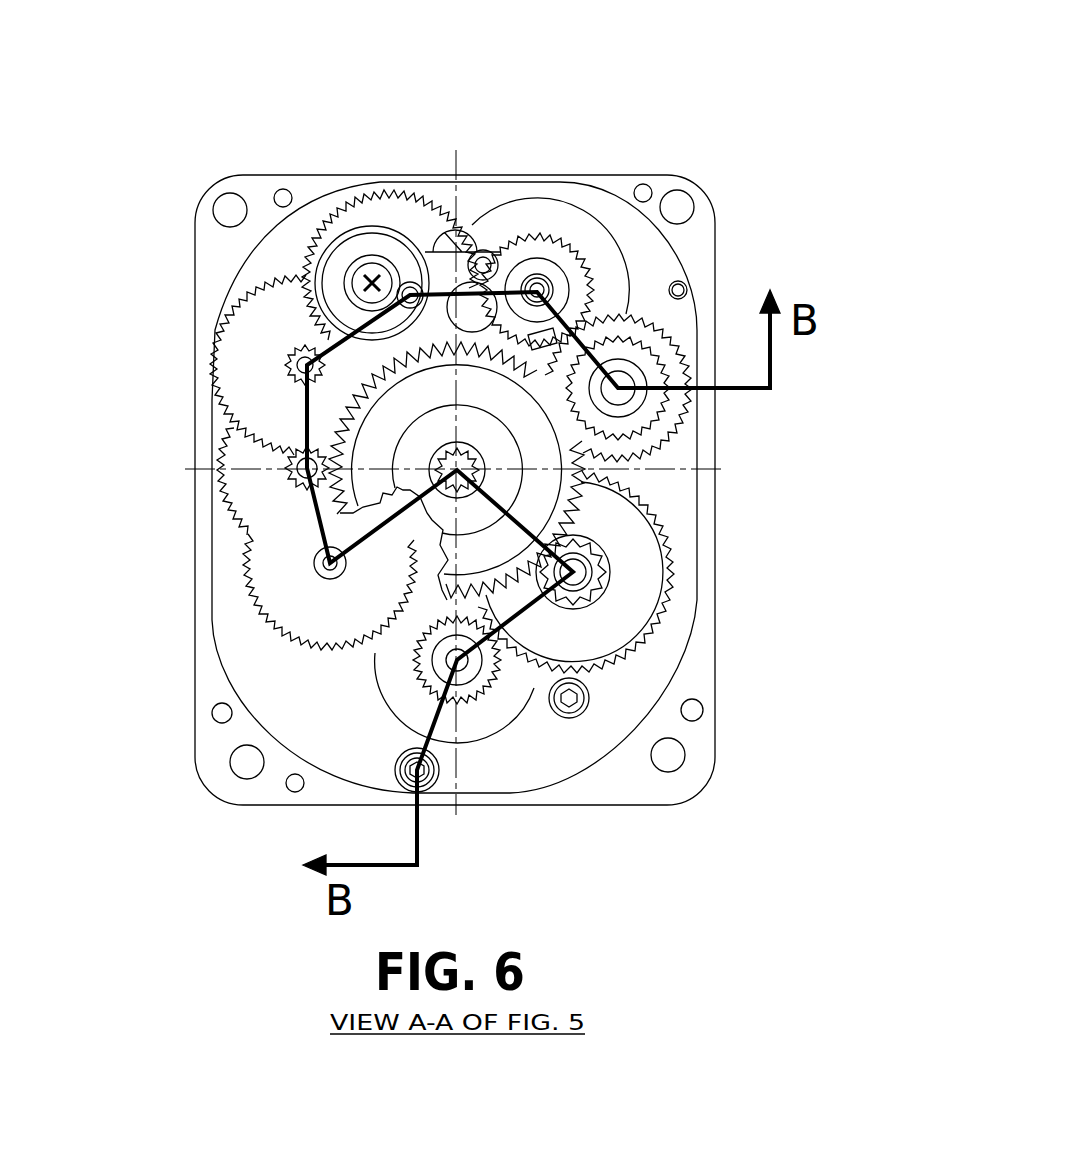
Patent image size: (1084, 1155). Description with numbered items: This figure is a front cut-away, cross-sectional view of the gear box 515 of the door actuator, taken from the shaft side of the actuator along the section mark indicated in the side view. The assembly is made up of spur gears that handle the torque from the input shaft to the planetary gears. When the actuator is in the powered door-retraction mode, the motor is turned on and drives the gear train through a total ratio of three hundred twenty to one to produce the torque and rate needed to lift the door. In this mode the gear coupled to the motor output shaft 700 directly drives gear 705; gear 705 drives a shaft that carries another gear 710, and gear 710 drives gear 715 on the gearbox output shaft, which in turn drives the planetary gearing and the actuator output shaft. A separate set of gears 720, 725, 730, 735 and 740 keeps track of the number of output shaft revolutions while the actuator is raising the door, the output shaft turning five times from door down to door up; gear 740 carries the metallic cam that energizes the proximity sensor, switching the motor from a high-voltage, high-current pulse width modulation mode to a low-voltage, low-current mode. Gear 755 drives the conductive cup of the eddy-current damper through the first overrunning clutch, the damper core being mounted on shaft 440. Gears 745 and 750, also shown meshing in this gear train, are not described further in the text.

The gear box 515 is at (417, 437).
The gear 740 is at (434, 204).
The shaft 440 is at (629, 156).
The gear 755 is at (639, 212).
The gear 745 is at (725, 345).
The gear 750 is at (742, 401).
The gear 715 is at (691, 572).
The gear 710 is at (716, 594).
The gear 705 is at (626, 657).
The motor output shaft 700 is at (327, 730).
The gear 720 is at (332, 539).
The gear 725 is at (248, 592).
The gear 730 is at (189, 486).
The gear 735 is at (186, 365).